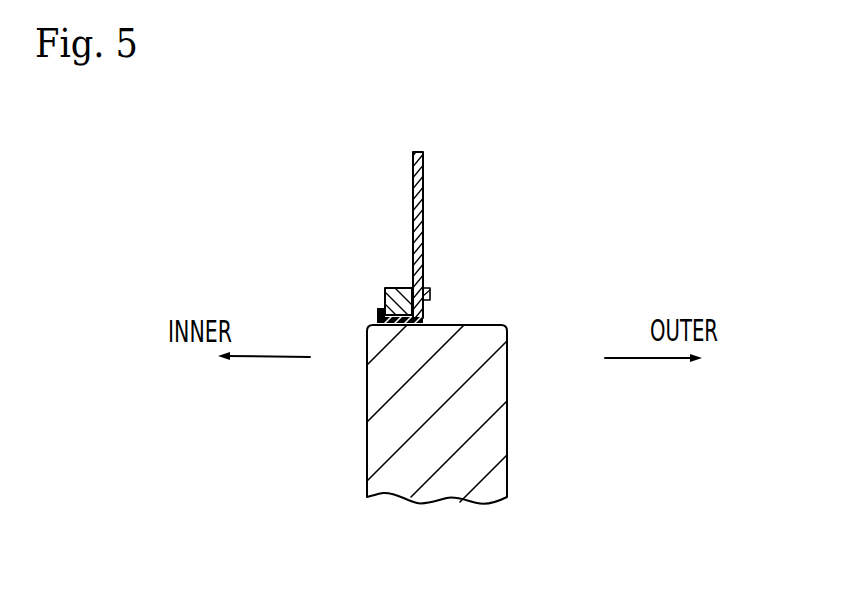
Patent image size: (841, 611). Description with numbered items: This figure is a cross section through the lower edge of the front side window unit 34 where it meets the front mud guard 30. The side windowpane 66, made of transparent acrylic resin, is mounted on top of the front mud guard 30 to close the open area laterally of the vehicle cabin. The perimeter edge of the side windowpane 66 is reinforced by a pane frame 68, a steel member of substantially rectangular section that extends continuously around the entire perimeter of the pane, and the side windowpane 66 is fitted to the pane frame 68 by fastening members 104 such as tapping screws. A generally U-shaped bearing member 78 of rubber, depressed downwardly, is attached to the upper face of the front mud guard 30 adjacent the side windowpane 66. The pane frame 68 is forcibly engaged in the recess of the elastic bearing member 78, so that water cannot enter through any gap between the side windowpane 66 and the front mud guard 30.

The front mud guard 30 is at (507, 418).
The front side window unit 34 is at (430, 151).
The side windowpane 66 is at (424, 195).
The pane frame 68 is at (385, 290).
The bearing member 78 is at (375, 313).
The fastening member 104 is at (430, 290).